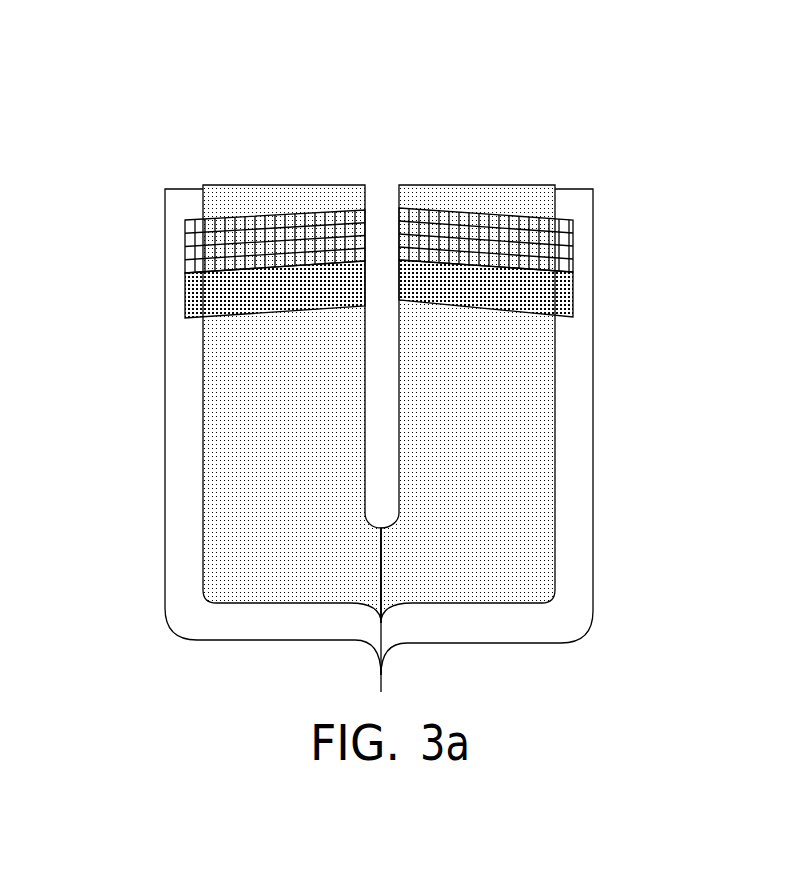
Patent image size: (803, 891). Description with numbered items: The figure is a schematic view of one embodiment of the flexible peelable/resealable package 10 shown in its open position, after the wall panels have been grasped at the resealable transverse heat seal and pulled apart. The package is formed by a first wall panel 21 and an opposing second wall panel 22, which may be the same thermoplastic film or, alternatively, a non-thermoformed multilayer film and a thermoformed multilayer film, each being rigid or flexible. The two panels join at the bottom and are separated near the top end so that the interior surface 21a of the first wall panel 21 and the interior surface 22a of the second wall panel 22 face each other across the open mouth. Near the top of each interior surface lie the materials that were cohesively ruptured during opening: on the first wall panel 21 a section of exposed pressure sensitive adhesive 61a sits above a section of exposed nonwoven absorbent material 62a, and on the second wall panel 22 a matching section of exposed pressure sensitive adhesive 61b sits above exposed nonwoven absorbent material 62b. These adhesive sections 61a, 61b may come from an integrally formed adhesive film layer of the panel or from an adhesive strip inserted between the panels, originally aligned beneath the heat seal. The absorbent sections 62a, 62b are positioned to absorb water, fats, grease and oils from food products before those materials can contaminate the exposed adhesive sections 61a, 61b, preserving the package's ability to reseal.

The flexible peelable/resealable package 10 is at (376, 110).
The first wall panel 21 is at (185, 417).
The interior surface of the first wall panel 21a is at (245, 493).
The second wall panel 22 is at (582, 380).
The interior surface of the second wall panel 22a is at (512, 462).
The exposed pressure sensitive adhesive section 61a is at (203, 243).
The exposed pressure sensitive adhesive section 61b is at (545, 250).
The exposed nonwoven absorbent material section 62a is at (205, 292).
The exposed nonwoven absorbent material section 62b is at (540, 300).